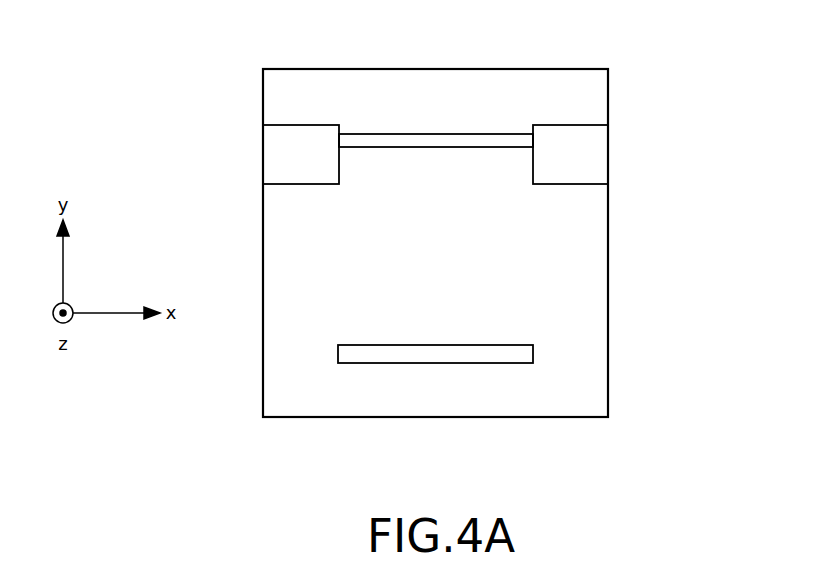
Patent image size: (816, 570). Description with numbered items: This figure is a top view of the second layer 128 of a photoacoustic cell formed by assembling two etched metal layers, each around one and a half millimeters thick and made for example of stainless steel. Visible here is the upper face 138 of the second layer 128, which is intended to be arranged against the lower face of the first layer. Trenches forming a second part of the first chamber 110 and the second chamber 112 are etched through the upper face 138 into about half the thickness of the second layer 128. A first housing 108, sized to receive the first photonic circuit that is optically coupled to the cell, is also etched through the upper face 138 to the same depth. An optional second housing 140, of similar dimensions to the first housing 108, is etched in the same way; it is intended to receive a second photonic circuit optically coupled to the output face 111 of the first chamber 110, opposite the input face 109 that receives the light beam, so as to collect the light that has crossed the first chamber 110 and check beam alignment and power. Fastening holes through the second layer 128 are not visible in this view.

The first housing 108 is at (292, 157).
The input face 109 is at (339, 134).
The first chamber 110 is at (429, 147).
The output face 111 is at (533, 142).
The second chamber 112 is at (437, 354).
The second layer 128 is at (598, 69).
The upper face 138 is at (600, 278).
The second housing 140 is at (587, 157).